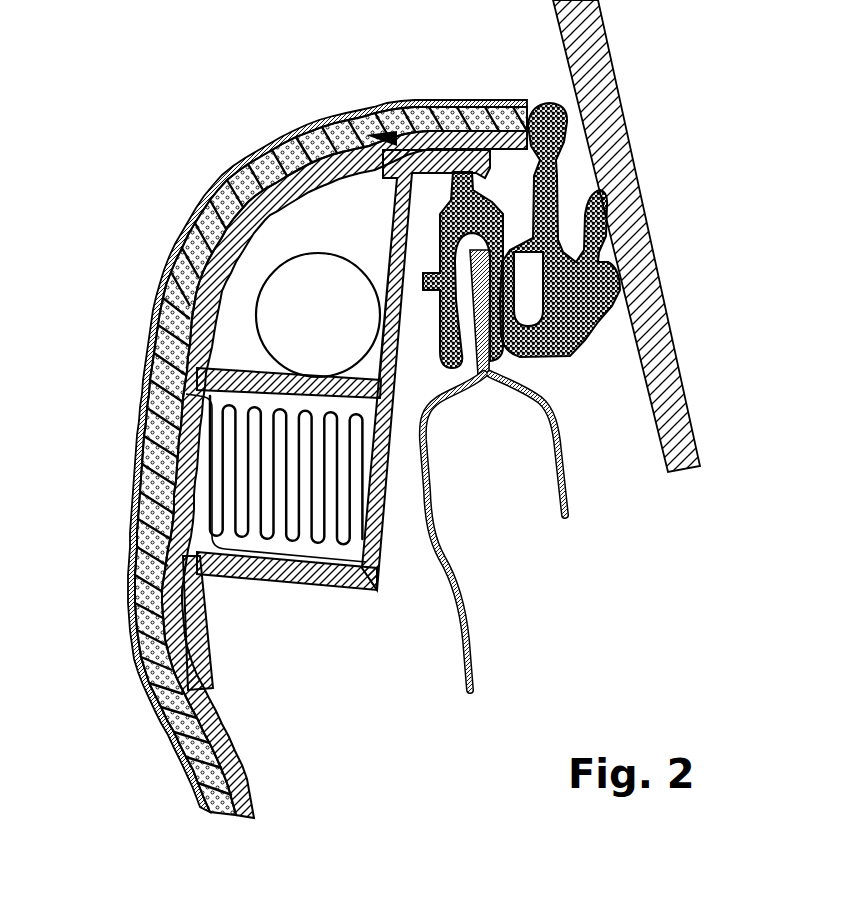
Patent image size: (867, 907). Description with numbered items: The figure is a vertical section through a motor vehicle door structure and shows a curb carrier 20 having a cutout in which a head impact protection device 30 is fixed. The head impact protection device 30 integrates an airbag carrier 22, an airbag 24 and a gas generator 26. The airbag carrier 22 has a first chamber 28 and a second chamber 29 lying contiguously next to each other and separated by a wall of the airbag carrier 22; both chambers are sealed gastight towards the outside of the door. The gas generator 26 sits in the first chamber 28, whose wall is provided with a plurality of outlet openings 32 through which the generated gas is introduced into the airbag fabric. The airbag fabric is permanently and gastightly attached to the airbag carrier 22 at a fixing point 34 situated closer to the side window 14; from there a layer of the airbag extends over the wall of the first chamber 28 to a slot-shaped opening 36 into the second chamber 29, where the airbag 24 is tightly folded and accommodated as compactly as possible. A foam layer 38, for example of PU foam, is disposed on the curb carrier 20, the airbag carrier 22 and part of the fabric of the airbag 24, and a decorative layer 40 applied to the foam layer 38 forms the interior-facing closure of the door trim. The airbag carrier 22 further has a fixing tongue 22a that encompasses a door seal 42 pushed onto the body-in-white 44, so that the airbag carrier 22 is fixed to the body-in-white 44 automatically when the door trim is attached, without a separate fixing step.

The side window 14 is at (600, 90).
The curb carrier 20 is at (288, 426).
The airbag carrier 22 is at (336, 420).
The fixing tongue 22a is at (557, 167).
The airbag 24 is at (225, 490).
The gas generator 26 is at (330, 293).
The first chamber 28 is at (230, 318).
The second chamber 29 is at (298, 565).
The head impact protection device 30 is at (380, 598).
The outlet openings 32 is at (193, 218).
The fixing point 34 is at (371, 136).
The slot-shaped opening 36 is at (192, 405).
The foam layer 38 is at (164, 740).
The decorative layer 40 is at (141, 684).
The door seal 42 is at (500, 244).
The body-in-white 44 is at (548, 398).